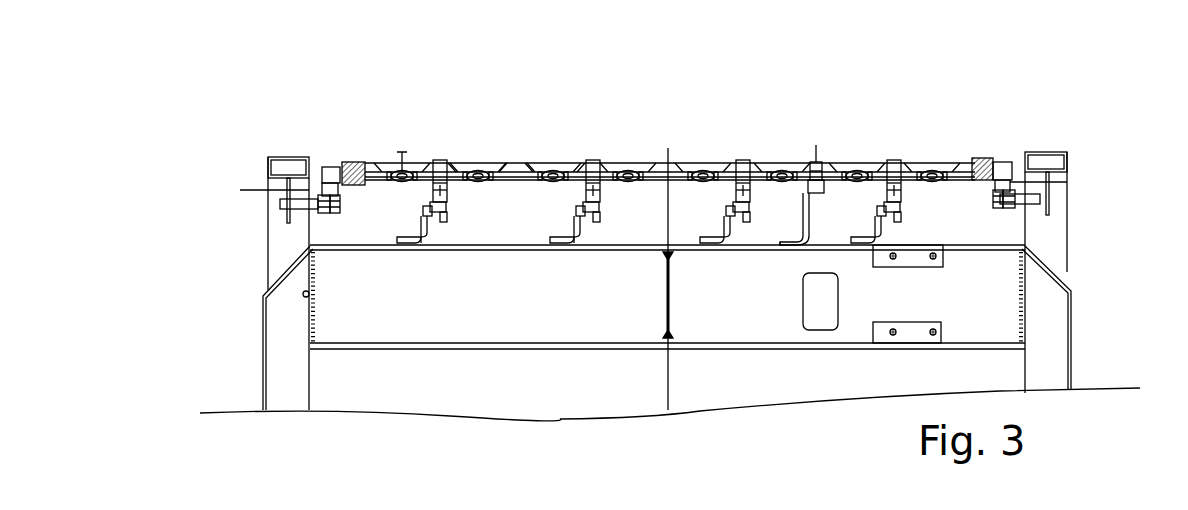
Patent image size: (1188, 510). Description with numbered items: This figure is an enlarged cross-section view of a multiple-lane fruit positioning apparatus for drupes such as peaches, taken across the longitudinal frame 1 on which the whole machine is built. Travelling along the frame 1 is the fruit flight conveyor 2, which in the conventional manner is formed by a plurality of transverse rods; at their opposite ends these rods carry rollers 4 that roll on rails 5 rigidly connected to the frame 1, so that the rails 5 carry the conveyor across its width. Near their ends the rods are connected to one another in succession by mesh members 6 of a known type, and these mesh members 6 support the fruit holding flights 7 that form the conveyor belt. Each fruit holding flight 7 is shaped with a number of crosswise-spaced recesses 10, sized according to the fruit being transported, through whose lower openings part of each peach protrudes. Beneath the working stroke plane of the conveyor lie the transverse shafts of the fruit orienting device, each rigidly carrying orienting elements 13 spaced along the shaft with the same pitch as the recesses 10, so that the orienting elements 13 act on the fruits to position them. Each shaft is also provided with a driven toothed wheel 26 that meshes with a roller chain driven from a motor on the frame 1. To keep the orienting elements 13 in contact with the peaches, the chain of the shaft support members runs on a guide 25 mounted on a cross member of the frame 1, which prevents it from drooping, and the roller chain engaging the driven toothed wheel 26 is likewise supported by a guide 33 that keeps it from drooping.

The longitudinal frame 1 is at (1089, 247).
The fruit flight conveyor 2 is at (1020, 124).
The rollers 4 is at (334, 165).
The rails 5 is at (309, 190).
The mesh members 6 is at (353, 162).
The fruit holding flights 7 is at (674, 150).
The recesses 10 is at (470, 163).
The orienting elements 13 is at (562, 163).
The guide 25 is at (445, 207).
The driven toothed wheel 26 is at (822, 160).
The guide 33 is at (813, 196).